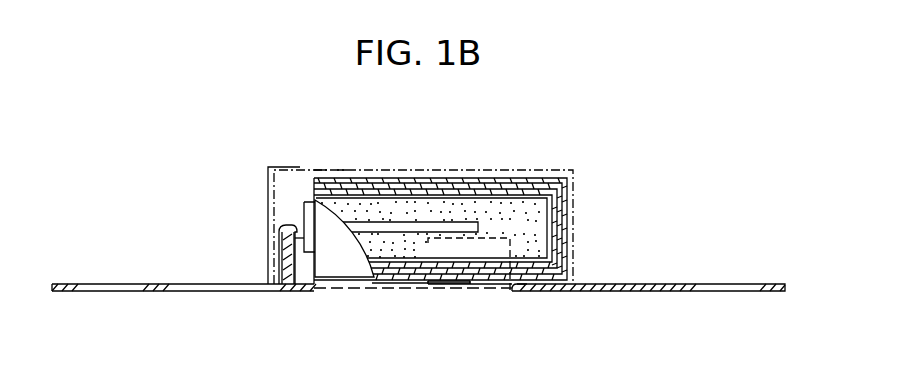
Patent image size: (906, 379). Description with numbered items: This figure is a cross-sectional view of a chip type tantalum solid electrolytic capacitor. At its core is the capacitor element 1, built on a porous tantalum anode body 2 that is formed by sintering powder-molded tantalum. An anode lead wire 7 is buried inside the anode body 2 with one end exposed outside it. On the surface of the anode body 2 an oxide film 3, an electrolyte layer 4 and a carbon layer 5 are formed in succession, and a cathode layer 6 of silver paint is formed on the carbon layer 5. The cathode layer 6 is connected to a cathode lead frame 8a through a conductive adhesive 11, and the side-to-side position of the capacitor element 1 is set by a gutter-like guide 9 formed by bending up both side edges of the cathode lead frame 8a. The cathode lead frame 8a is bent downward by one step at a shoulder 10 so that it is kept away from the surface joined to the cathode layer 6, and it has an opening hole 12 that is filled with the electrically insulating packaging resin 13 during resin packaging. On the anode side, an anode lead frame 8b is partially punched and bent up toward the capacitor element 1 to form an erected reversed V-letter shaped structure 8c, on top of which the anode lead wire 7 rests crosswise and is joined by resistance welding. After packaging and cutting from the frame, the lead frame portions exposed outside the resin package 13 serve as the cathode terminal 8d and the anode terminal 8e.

The capacitor element 1 is at (338, 288).
The tantalum anode body 2 is at (331, 203).
The oxide film 3 is at (397, 192).
The electrolyte layer 4 is at (439, 183).
The carbon layer 5 is at (492, 182).
The cathode layer 6 is at (524, 180).
The anode lead wire 7 is at (299, 228).
The cathode lead frame 8a is at (622, 290).
The anode lead frame 8b is at (197, 290).
The reversed V-letter shaped structure 8c is at (282, 248).
The cathode terminal 8d is at (567, 287).
The anode terminal 8e is at (303, 290).
The gutter-like guide 9 is at (438, 247).
The shoulder 10 is at (522, 285).
The conductive adhesive 11 is at (450, 280).
The opening hole 12 is at (487, 283).
The packaging resin 13 is at (554, 172).